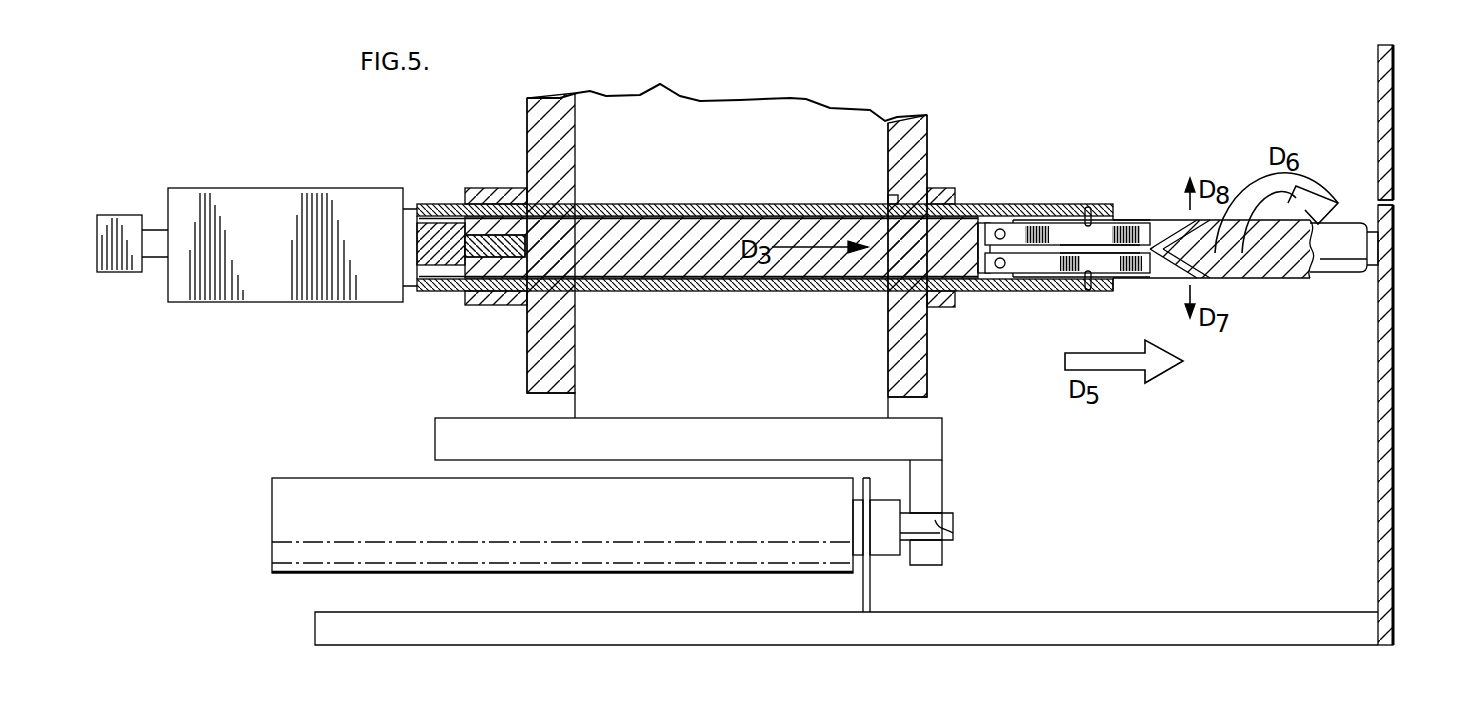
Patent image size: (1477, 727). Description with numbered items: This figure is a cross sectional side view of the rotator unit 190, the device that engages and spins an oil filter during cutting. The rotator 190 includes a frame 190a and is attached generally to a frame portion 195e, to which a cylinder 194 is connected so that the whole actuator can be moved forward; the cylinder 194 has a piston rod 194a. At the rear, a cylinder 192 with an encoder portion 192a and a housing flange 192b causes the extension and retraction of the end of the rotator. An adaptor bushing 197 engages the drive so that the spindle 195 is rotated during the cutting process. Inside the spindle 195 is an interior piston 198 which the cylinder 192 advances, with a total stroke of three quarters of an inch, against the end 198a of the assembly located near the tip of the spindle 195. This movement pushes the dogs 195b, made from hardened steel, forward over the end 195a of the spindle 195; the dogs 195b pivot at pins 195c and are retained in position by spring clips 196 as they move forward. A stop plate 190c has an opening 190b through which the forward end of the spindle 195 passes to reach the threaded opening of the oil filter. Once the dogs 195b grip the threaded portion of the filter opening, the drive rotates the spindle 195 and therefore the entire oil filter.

The rotator unit 190 is at (892, 367).
The frame 190a is at (1268, 628).
The opening 190b is at (1388, 278).
The stop plate 190c is at (1378, 97).
The cylinder 192 is at (228, 200).
The motor encoder 192a is at (122, 230).
The bearing housing flange 192b is at (448, 224).
The cylinder 194 is at (283, 530).
The cylinder piston rod 194a is at (948, 533).
The spindle 195 is at (1154, 300).
The end of the spindle 195a is at (1303, 262).
The dogs 195b is at (1070, 233).
The pins 195c is at (1003, 227).
The frame portion 195e is at (437, 437).
The spring clips 196 is at (1087, 292).
The adaptor bushing 197 is at (421, 212).
The interior piston 198 is at (703, 232).
The end of the assembly 198a is at (990, 220).